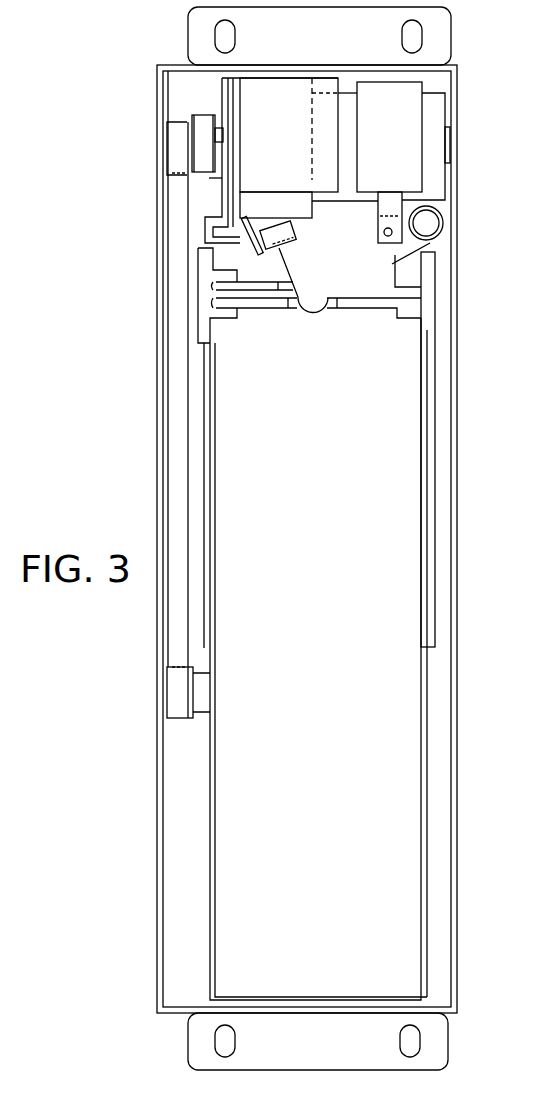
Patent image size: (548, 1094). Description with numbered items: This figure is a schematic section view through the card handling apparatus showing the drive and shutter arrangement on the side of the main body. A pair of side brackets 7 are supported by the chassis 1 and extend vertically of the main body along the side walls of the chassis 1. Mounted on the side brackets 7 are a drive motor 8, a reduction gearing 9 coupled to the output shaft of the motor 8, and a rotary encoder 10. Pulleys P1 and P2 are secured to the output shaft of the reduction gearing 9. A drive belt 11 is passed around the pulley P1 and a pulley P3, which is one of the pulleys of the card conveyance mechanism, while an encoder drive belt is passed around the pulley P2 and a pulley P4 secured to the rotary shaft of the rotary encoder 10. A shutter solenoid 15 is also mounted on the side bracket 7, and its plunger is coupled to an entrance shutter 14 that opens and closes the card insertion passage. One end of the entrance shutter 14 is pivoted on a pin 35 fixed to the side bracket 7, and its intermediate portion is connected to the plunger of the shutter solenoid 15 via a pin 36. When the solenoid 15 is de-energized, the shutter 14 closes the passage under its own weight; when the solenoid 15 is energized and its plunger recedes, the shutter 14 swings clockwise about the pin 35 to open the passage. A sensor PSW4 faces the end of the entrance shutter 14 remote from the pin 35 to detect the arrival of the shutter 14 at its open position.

The chassis 1 is at (457, 585).
The side brackets 7 is at (203, 467).
The drive motor 8 is at (436, 103).
The reduction gearing 9 is at (250, 205).
The rotary encoder 10 is at (265, 97).
The drive belt 11 is at (178, 388).
The entrance shutter 14 is at (397, 263).
The shutter solenoid 15 is at (410, 160).
The pin 35 is at (425, 222).
The pin 36 is at (430, 243).
The pulley P1 is at (166, 128).
The pulley P2 is at (217, 178).
The pulley P3 is at (165, 712).
The pulley P4 is at (215, 113).
The sensor PSW4 is at (378, 222).